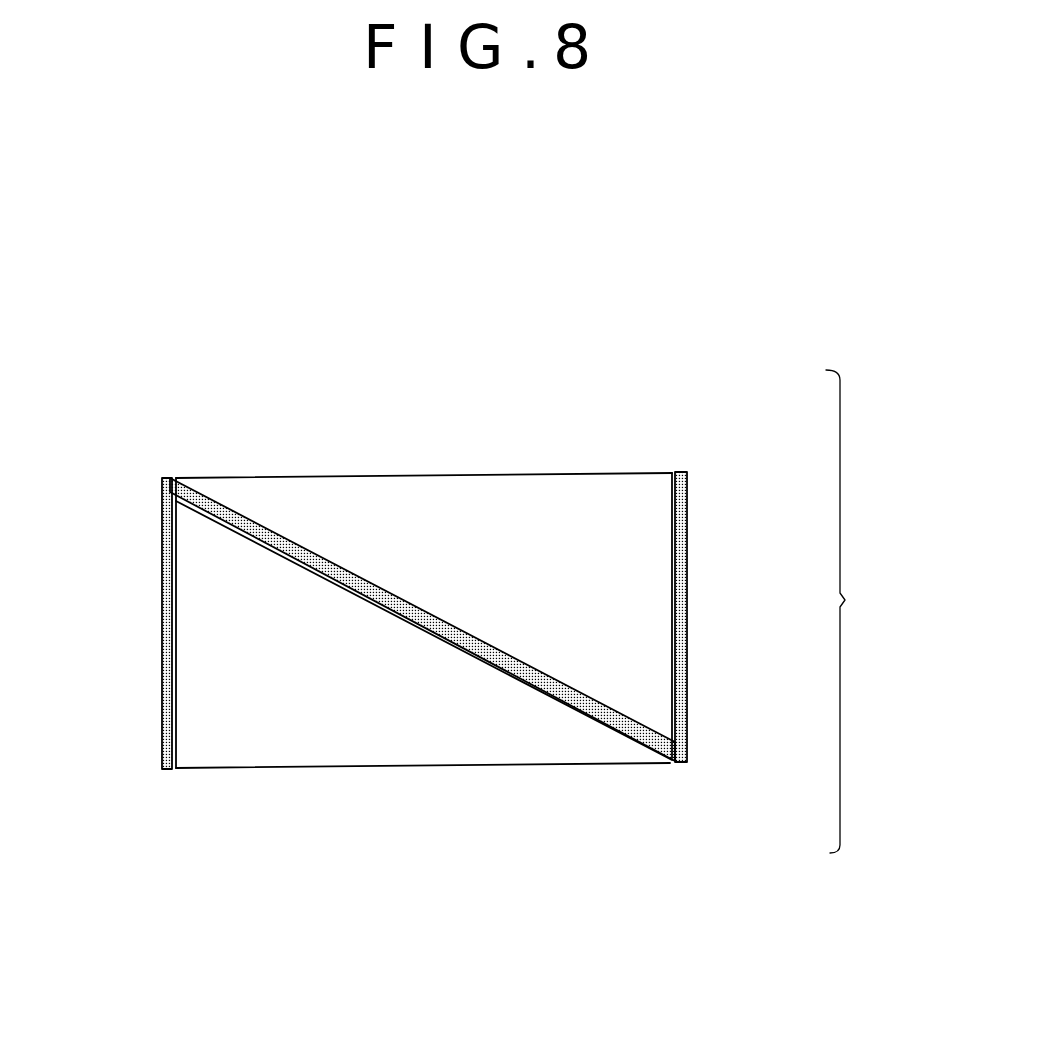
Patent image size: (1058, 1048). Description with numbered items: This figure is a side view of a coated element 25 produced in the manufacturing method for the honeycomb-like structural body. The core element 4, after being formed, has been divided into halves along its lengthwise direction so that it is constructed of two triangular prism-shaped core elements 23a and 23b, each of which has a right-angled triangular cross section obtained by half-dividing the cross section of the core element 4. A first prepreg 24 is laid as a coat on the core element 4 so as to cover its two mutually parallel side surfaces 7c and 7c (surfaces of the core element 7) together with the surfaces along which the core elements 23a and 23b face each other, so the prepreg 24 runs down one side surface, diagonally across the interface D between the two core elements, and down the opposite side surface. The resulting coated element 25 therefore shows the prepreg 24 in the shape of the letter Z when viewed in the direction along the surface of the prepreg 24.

The coated element 25 is at (526, 381).
The prepreg 24 is at (162, 478).
The core element 23a is at (657, 467).
The core element 23b is at (658, 767).
The side surface 7c is at (166, 613).
The frame 7 is at (420, 620).
The diagonal member D is at (377, 583).
The core element 4 is at (849, 611).